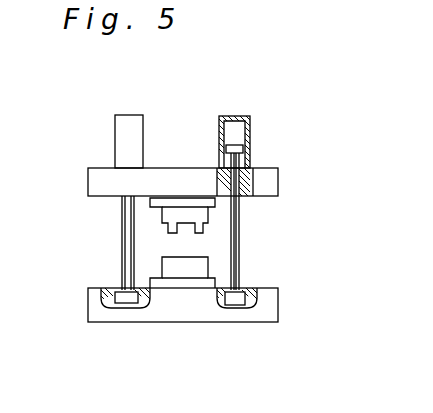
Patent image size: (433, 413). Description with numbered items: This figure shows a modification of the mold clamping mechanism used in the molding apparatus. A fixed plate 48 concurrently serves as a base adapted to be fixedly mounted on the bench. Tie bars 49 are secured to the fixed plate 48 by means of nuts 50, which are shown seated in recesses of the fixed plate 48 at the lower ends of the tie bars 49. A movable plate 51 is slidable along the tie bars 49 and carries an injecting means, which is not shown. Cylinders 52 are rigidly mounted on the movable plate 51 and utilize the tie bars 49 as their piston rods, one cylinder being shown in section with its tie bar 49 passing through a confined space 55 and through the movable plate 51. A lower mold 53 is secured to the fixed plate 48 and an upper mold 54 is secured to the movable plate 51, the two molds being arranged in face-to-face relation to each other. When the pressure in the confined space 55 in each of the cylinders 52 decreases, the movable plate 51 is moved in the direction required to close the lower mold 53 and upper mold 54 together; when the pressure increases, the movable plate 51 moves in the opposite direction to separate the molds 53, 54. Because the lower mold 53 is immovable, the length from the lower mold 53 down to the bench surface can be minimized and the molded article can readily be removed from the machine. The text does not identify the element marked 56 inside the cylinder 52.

The fixed plate 48 is at (267, 303).
The tie bars 49 is at (123, 257).
The nuts 50 is at (115, 300).
The movable plate 51 is at (270, 185).
The cylinders 52 is at (127, 133).
The lower mold 53 is at (180, 263).
The upper mold 54 is at (175, 215).
The confined space 55 is at (247, 165).
The piston 56 is at (233, 137).